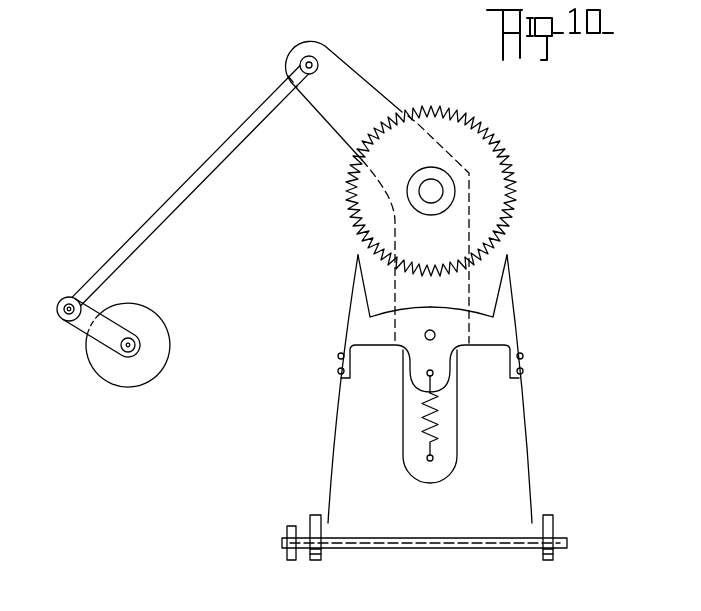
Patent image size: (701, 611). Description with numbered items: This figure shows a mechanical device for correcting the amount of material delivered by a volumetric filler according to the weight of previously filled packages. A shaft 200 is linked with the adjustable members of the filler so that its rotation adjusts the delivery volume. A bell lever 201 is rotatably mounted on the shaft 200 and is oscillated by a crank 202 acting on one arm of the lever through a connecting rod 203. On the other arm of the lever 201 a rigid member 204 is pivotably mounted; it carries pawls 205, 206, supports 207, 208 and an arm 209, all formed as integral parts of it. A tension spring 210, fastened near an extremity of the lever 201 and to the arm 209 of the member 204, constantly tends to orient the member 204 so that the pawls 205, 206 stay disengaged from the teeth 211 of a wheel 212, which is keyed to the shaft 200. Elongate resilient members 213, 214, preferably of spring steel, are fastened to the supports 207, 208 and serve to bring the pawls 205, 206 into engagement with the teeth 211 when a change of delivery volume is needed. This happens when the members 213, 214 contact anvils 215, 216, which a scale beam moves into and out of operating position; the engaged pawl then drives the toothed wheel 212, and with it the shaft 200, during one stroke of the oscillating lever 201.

The shaft 200 is at (438, 190).
The bell lever 201 is at (355, 82).
The crank 202 is at (77, 320).
The connecting rod 203 is at (208, 163).
The rigid member 204 is at (390, 342).
The pawl 205 is at (358, 279).
The pawl 206 is at (508, 282).
The support 207 is at (338, 363).
The support 208 is at (523, 363).
The arm 209 is at (445, 372).
The tension spring 210 is at (435, 415).
The teeth 211 is at (517, 197).
The wheel 212 is at (360, 212).
The elongate resilient member 213 is at (330, 448).
The elongate resilient member 214 is at (535, 448).
The anvil 215 is at (312, 517).
The anvil 216 is at (553, 517).